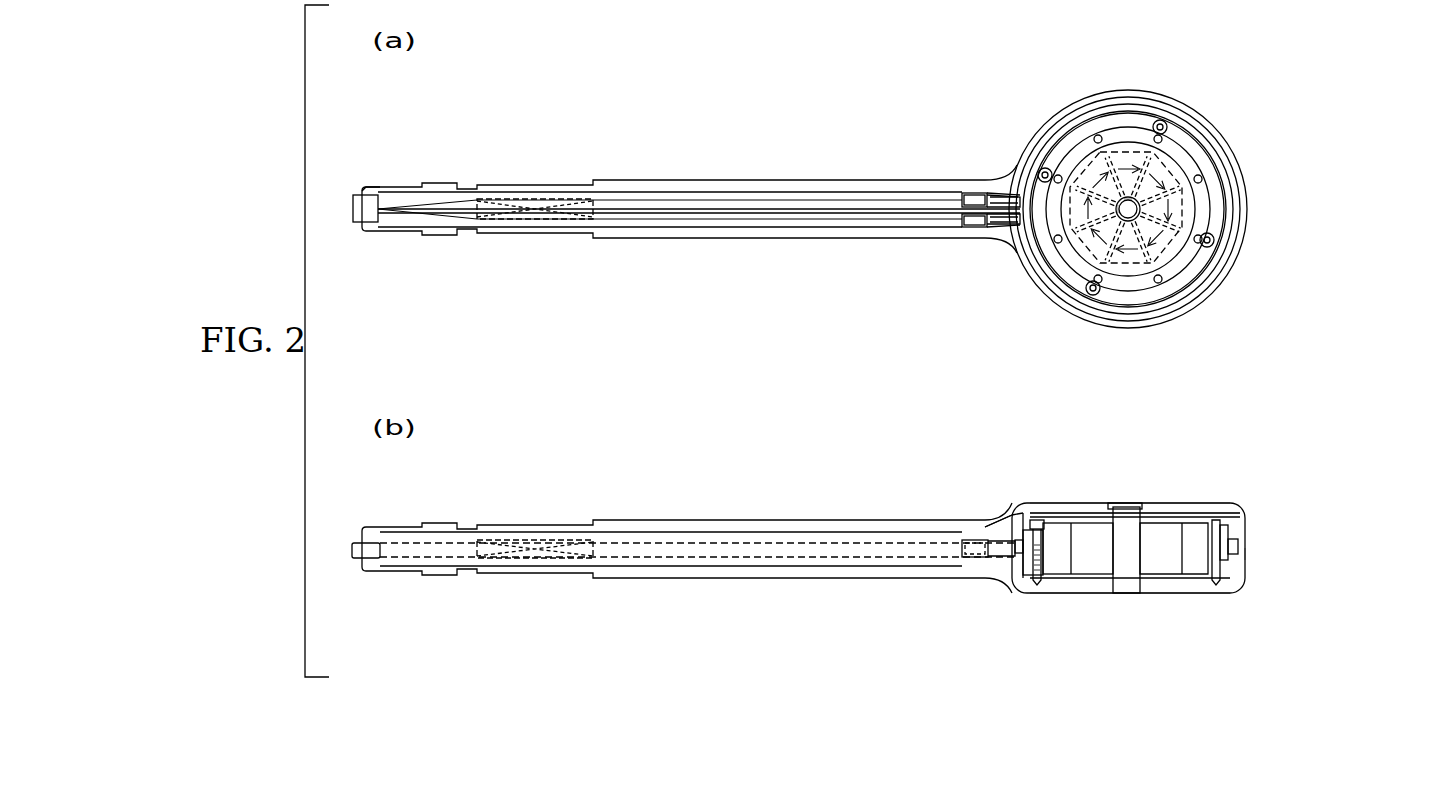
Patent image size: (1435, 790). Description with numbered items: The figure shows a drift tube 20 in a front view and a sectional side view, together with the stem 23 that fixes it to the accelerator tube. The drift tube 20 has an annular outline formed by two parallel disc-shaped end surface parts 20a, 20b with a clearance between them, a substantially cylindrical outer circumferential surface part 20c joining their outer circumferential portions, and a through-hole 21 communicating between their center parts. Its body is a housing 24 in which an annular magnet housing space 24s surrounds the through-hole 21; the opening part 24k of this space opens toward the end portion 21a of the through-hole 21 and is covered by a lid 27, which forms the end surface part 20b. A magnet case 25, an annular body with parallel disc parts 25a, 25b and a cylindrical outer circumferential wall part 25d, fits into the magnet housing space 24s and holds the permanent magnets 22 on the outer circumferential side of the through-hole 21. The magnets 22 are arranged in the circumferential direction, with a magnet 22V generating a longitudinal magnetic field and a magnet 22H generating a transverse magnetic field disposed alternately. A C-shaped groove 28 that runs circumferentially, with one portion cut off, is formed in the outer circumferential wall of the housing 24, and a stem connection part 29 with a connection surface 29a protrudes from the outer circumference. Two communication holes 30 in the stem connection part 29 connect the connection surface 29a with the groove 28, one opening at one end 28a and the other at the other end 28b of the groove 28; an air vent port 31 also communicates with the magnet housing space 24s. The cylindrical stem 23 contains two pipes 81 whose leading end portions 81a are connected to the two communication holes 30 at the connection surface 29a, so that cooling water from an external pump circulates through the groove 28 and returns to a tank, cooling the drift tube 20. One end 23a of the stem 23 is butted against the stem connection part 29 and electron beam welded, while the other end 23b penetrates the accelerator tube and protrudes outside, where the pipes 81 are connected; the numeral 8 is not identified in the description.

The connector end 8 is at (353, 214).
The drift tube 20 is at (1168, 99).
The end surface part 20a is at (1215, 594).
The end surface part 20b is at (1215, 503).
The outer circumferential surface part 20c is at (1240, 249).
The through-hole 21 is at (1175, 287).
The end portion of the through-hole 21a is at (1118, 503).
The magnets 22 is at (1066, 565).
The magnet for generating a longitudinal magnetic field 22V is at (1083, 162).
The magnet for generating a transverse magnetic field 22H is at (1128, 152).
The stem 23 is at (762, 239).
The one end of the stem 23a is at (955, 183).
The other end of the stem 23b is at (366, 186).
The housing 24 is at (1178, 130).
The opening part 24k is at (1027, 505).
The magnet housing space 24s is at (1090, 568).
The magnet case 25 is at (1225, 168).
The disc part of the magnet case 25a is at (1180, 522).
The disc part of the magnet case 25b is at (1160, 585).
The cylindrical outer circumferential wall part 25d is at (1222, 566).
The lid 27 is at (1090, 510).
The C-shaped groove 28 is at (1242, 201).
The one end of the C-shaped groove 28a is at (1010, 230).
The other end of the C-shaped groove 28b is at (1006, 192).
The stem connection part 29 is at (992, 192).
The connection surface 29a is at (985, 191).
The communication holes 30 is at (970, 197).
The air vent port 31 is at (1011, 518).
The pipes 81 is at (665, 198).
The leading end portions 81a is at (960, 192).